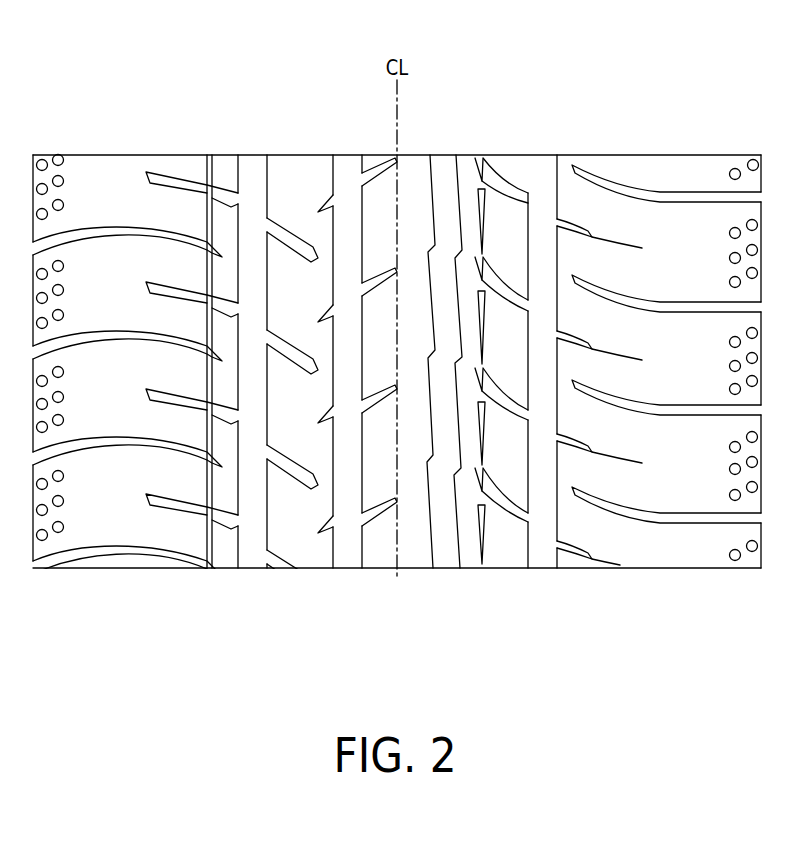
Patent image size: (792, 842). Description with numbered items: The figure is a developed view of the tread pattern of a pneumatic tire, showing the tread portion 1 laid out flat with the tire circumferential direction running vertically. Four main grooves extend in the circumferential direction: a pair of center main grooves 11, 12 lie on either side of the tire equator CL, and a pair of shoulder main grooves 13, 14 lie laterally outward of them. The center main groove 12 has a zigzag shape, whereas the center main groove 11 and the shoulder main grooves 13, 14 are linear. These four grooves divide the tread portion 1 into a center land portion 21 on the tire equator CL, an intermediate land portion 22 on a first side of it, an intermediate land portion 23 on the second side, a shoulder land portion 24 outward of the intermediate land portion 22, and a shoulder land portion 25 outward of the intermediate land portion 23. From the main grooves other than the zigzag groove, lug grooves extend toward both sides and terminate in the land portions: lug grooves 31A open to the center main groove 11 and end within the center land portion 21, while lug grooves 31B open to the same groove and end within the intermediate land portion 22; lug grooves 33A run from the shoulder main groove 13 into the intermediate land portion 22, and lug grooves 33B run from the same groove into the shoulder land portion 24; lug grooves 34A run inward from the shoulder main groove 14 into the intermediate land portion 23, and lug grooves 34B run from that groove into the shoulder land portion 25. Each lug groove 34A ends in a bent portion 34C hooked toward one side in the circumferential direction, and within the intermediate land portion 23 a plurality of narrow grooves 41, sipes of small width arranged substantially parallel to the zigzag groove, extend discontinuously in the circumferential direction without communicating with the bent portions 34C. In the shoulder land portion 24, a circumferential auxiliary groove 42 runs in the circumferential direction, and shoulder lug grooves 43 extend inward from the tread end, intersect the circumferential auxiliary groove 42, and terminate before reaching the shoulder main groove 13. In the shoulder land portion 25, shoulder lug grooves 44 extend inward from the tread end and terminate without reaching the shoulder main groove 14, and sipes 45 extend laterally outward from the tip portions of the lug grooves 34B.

The tread portion 1 is at (598, 157).
The center main groove 11 is at (348, 165).
The center main groove 12 is at (443, 167).
The shoulder main groove 13 is at (255, 168).
The shoulder main groove 14 is at (542, 167).
The center land portion 21 is at (415, 167).
The intermediate land portion 22 is at (300, 168).
The intermediate land portion 23 is at (505, 167).
The shoulder land portion 24 is at (134, 170).
The shoulder land portion 25 is at (658, 170).
The lug groove 31A is at (377, 492).
The lug groove 31B is at (327, 530).
The lug groove 33A is at (281, 558).
The lug groove 33B is at (180, 505).
The lug groove 34A is at (512, 523).
The lug groove 34B is at (573, 557).
The bent portion 34C is at (480, 483).
The narrow groove 41 is at (482, 538).
The circumferential auxiliary groove 42 is at (208, 542).
The shoulder lug groove 43 is at (115, 567).
The shoulder lug groove 44 is at (683, 522).
The sipe 45 is at (627, 460).